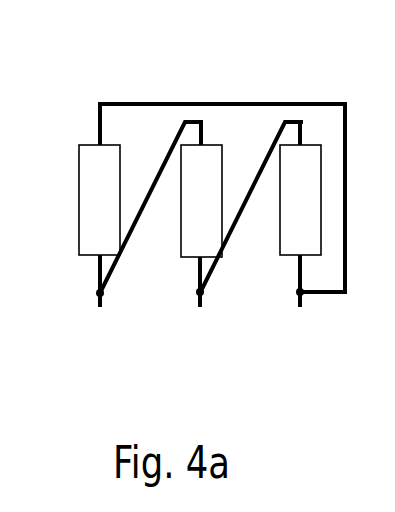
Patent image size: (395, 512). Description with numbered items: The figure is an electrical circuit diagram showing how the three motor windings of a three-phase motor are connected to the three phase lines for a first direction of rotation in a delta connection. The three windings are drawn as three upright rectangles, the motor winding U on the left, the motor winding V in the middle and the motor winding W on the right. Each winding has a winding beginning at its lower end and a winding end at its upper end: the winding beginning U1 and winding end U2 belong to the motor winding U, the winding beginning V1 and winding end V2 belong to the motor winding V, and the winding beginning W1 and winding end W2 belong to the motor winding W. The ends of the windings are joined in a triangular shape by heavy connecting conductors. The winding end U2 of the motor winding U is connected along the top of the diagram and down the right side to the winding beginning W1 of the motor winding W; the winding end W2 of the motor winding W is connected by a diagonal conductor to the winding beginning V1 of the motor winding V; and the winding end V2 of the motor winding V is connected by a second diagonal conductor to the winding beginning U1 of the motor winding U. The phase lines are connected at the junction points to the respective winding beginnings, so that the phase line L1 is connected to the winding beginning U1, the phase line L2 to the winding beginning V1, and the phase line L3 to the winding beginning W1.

The motor winding U is at (89, 219).
The motor winding V is at (193, 213).
The motor winding W is at (300, 205).
The winding beginning U1 is at (100, 263).
The winding end U2 is at (97, 140).
The winding beginning V1 is at (200, 264).
The winding end V2 is at (202, 143).
The winding beginning W1 is at (300, 262).
The winding end W2 is at (302, 143).
The phase line L1 is at (101, 323).
The phase line L2 is at (206, 323).
The phase line L3 is at (300, 324).